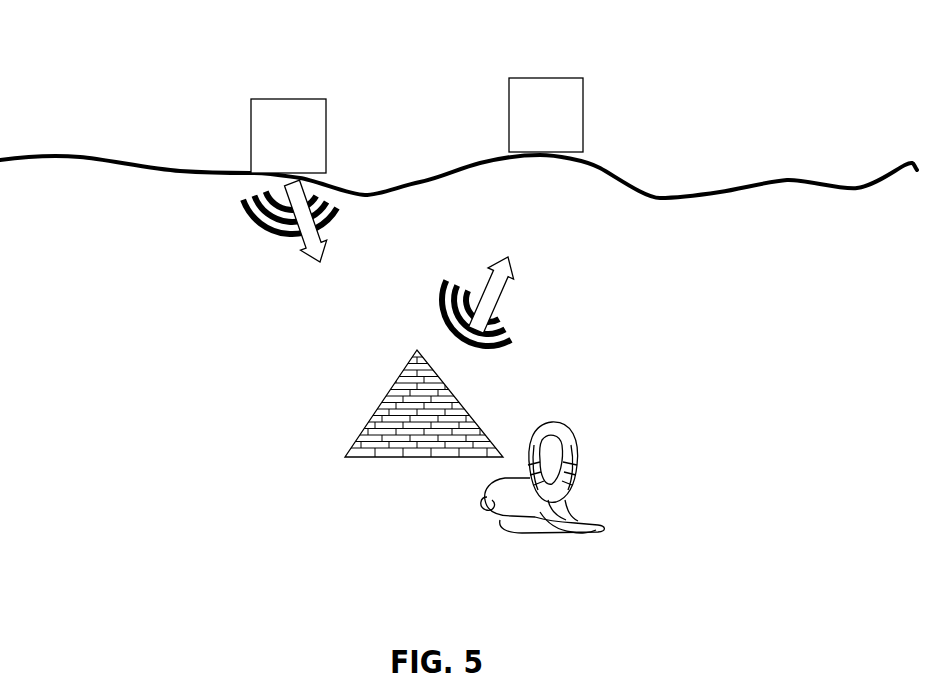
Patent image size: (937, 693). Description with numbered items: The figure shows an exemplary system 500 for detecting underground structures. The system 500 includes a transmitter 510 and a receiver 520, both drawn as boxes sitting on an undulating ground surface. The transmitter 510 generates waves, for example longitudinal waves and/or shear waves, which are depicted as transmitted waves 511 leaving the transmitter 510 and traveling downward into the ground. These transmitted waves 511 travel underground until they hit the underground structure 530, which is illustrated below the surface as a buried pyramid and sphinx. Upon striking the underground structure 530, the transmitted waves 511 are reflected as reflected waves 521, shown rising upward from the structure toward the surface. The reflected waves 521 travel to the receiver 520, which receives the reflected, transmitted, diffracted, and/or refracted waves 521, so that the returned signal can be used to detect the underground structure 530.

The system 500 is at (695, 100).
The transmitter 510 is at (240, 100).
The receiver 520 is at (492, 112).
The transmitted waves 511 is at (250, 238).
The reflected waves 521 is at (548, 322).
The underground structure 530 is at (323, 398).